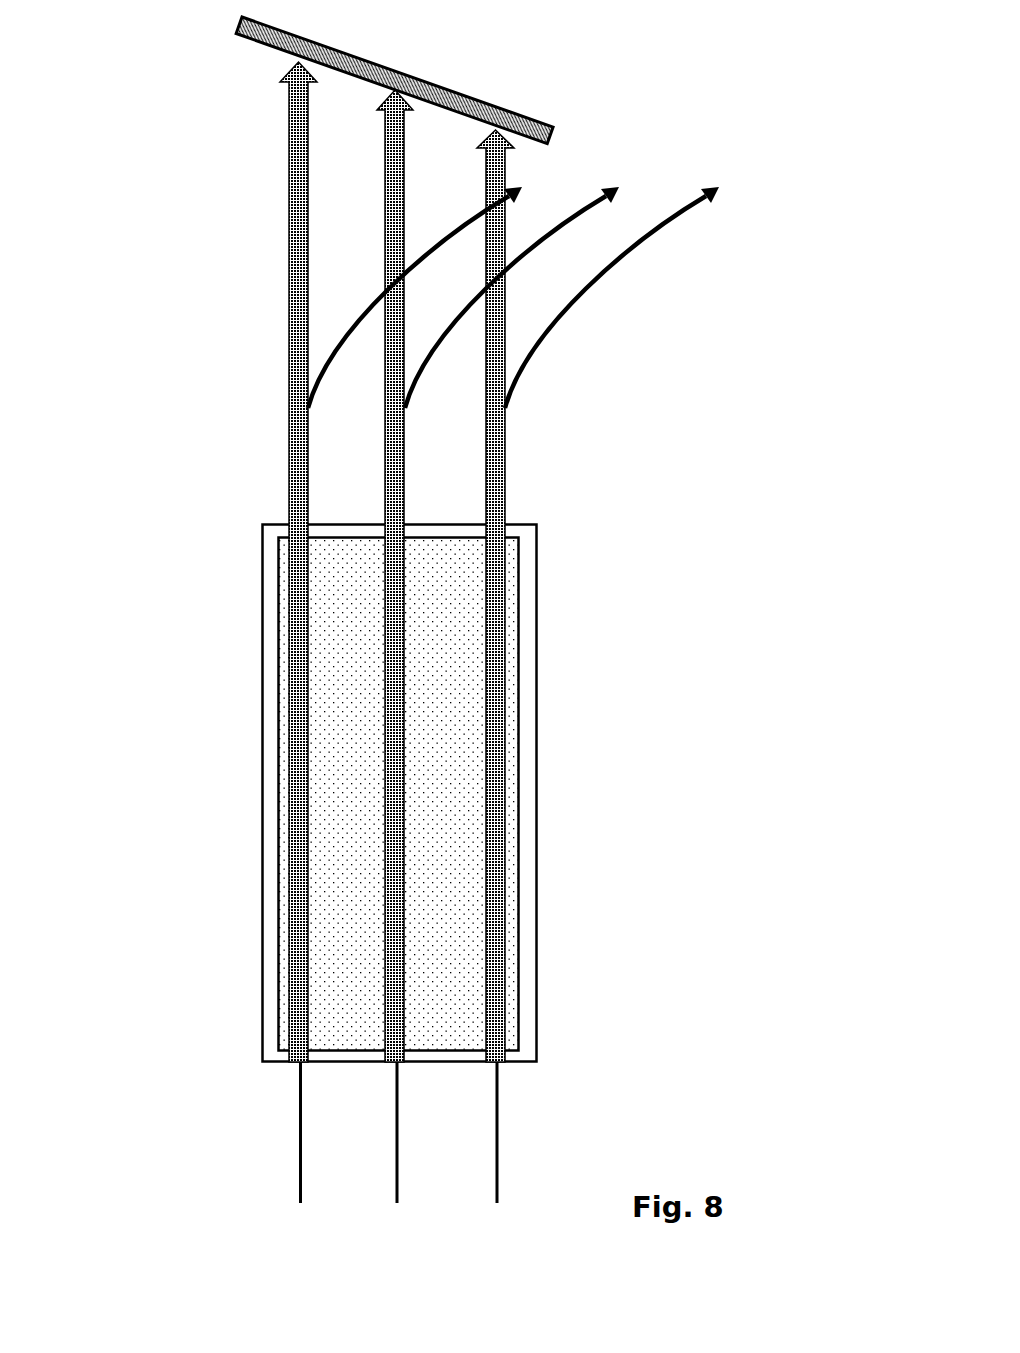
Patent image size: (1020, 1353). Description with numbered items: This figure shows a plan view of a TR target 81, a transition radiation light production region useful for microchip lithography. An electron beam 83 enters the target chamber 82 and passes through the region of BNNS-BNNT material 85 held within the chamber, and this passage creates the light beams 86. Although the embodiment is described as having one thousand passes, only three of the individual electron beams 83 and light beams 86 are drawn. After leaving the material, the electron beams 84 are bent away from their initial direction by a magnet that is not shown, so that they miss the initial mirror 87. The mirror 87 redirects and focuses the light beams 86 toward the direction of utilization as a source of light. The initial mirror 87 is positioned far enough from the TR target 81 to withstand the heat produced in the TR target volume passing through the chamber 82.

The TR target 81 is at (437, 632).
The target chamber 82 is at (512, 793).
The electron beam 83 is at (303, 1123).
The electron beams 84 is at (320, 380).
The BNNS-BNNT material 85 is at (442, 757).
The light beams 86 is at (485, 490).
The initial mirror 87 is at (463, 88).